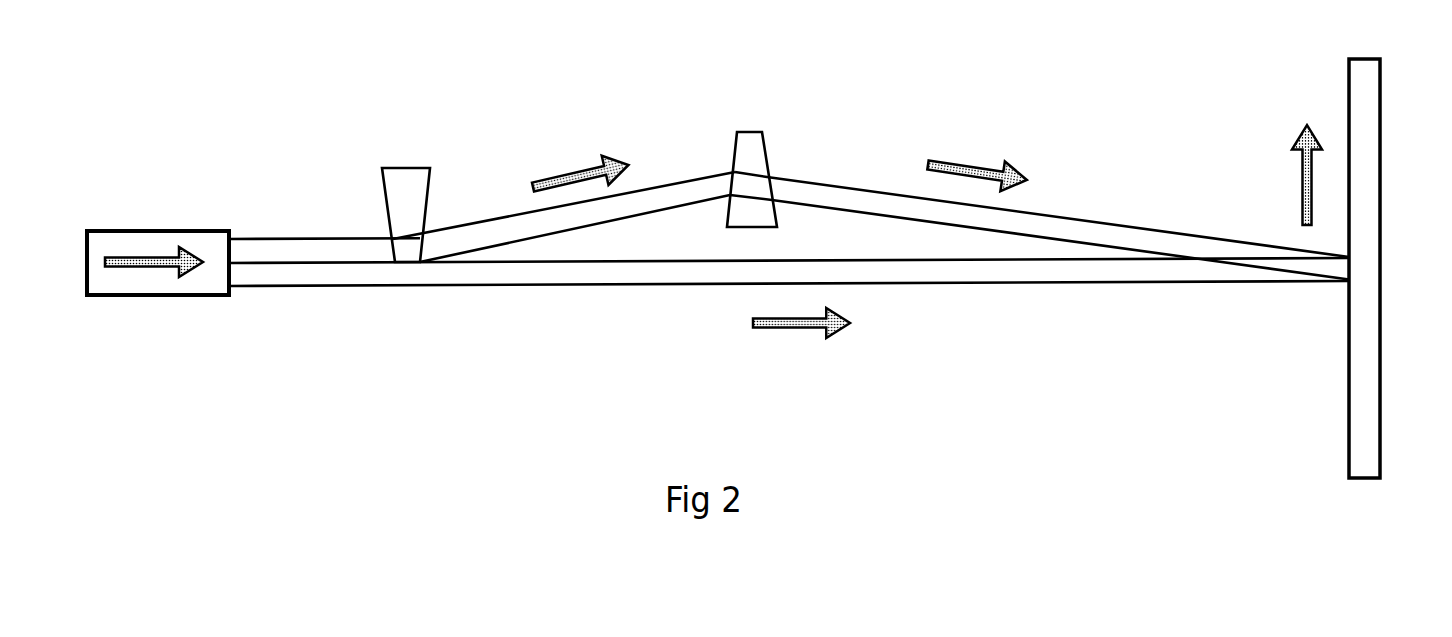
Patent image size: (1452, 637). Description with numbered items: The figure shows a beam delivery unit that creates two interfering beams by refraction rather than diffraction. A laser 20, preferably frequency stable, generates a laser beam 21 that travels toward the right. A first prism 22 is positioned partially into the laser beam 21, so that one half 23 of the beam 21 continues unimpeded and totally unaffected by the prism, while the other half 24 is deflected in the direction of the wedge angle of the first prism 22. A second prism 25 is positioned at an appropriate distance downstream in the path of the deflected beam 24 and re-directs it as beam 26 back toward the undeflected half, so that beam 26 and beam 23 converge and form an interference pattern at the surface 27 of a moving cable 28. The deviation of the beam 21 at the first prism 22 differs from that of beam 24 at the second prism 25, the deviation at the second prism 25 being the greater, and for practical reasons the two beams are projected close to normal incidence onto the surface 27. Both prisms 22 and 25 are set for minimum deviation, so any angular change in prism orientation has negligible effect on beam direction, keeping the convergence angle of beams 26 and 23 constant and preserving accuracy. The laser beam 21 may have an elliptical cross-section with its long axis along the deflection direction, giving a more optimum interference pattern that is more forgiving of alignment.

The laser 20 is at (138, 245).
The laser beam 21 is at (350, 289).
The first prism 22 is at (430, 164).
The one half of the beam 23 is at (722, 286).
The other half of the beam 24 is at (633, 182).
The second prism 25 is at (773, 141).
The re-directed beam 26 is at (1052, 205).
The surface 27 is at (1338, 289).
The moving cable 28 is at (1387, 217).